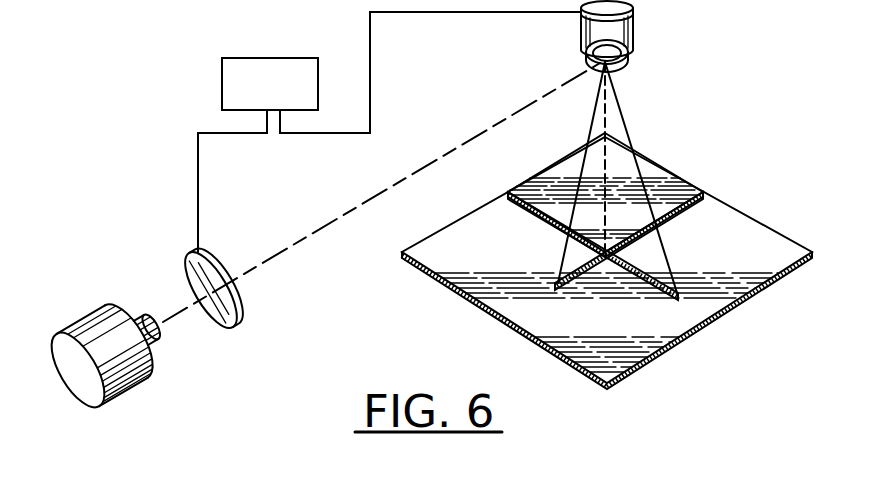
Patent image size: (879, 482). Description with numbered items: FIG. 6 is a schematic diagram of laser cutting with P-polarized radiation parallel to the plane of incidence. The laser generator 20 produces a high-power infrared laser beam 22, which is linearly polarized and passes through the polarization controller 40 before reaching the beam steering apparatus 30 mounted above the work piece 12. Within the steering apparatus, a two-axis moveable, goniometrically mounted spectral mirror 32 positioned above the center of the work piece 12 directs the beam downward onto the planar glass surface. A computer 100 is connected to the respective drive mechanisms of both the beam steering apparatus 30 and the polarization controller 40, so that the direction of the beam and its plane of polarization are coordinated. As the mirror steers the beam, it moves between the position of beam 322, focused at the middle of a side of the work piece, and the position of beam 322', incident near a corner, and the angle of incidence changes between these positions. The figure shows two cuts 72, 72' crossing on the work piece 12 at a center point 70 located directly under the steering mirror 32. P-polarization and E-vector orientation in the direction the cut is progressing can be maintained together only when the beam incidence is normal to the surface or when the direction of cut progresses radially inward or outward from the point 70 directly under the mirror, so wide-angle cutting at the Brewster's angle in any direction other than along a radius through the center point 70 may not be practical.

The work piece 12 is at (693, 332).
The laser generator 20 is at (90, 318).
The laser beam 22 is at (355, 208).
The beam steering apparatus 30 is at (580, 24).
The spectral mirror 32 is at (597, 63).
The polarization controller 40 is at (192, 257).
The center point 70 is at (578, 261).
The cut 72 is at (615, 261).
The cut 72' is at (565, 246).
The computer 100 is at (222, 88).
The beam 322 is at (597, 194).
The beam 322' is at (617, 182).